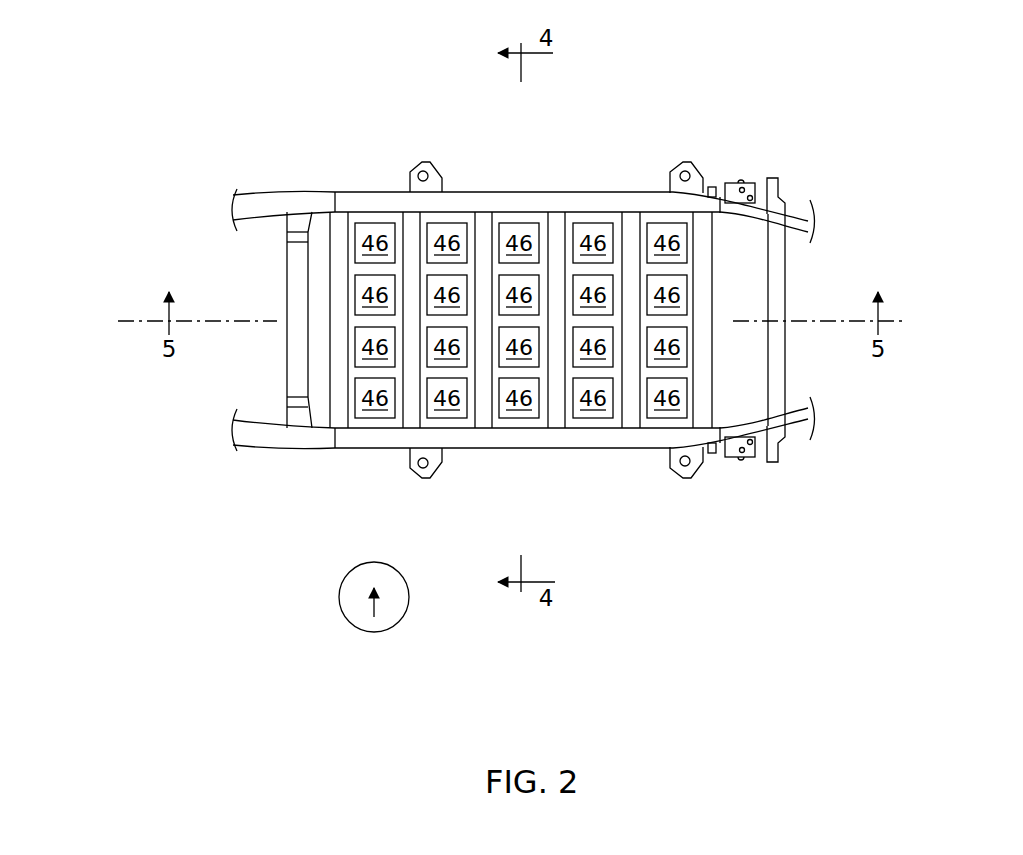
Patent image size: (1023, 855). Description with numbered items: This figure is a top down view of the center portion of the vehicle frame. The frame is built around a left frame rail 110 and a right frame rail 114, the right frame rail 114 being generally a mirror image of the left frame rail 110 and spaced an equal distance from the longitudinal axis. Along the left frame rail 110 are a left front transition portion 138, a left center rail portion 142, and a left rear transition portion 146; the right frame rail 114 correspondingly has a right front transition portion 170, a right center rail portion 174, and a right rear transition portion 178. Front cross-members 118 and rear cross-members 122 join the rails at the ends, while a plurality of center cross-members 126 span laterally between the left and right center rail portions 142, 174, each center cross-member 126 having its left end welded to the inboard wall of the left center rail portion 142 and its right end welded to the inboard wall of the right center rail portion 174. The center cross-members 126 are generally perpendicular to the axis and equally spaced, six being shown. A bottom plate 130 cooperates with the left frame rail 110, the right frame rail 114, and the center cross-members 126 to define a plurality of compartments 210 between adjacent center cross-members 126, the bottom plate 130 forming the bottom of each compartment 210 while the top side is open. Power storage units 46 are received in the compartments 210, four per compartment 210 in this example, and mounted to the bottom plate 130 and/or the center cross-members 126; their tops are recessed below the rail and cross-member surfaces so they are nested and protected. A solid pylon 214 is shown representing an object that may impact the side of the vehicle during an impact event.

The power storage unit 46 is at (521, 320).
The left frame rail 110 is at (320, 440).
The right frame rail 114 is at (372, 195).
The front cross-members 118 is at (290, 367).
The rear cross-members 122 is at (775, 376).
The center cross-member 126 is at (403, 217).
The bottom plate 130 is at (610, 217).
The left front transition portion 138 is at (258, 440).
The left center rail portion 142 is at (630, 432).
The left rear transition portion 146 is at (760, 420).
The right front transition portion 170 is at (289, 198).
The right center rail portion 174 is at (570, 195).
The right rear transition portion 178 is at (805, 218).
The compartment 210 is at (375, 428).
The solid pylon 214 is at (374, 632).